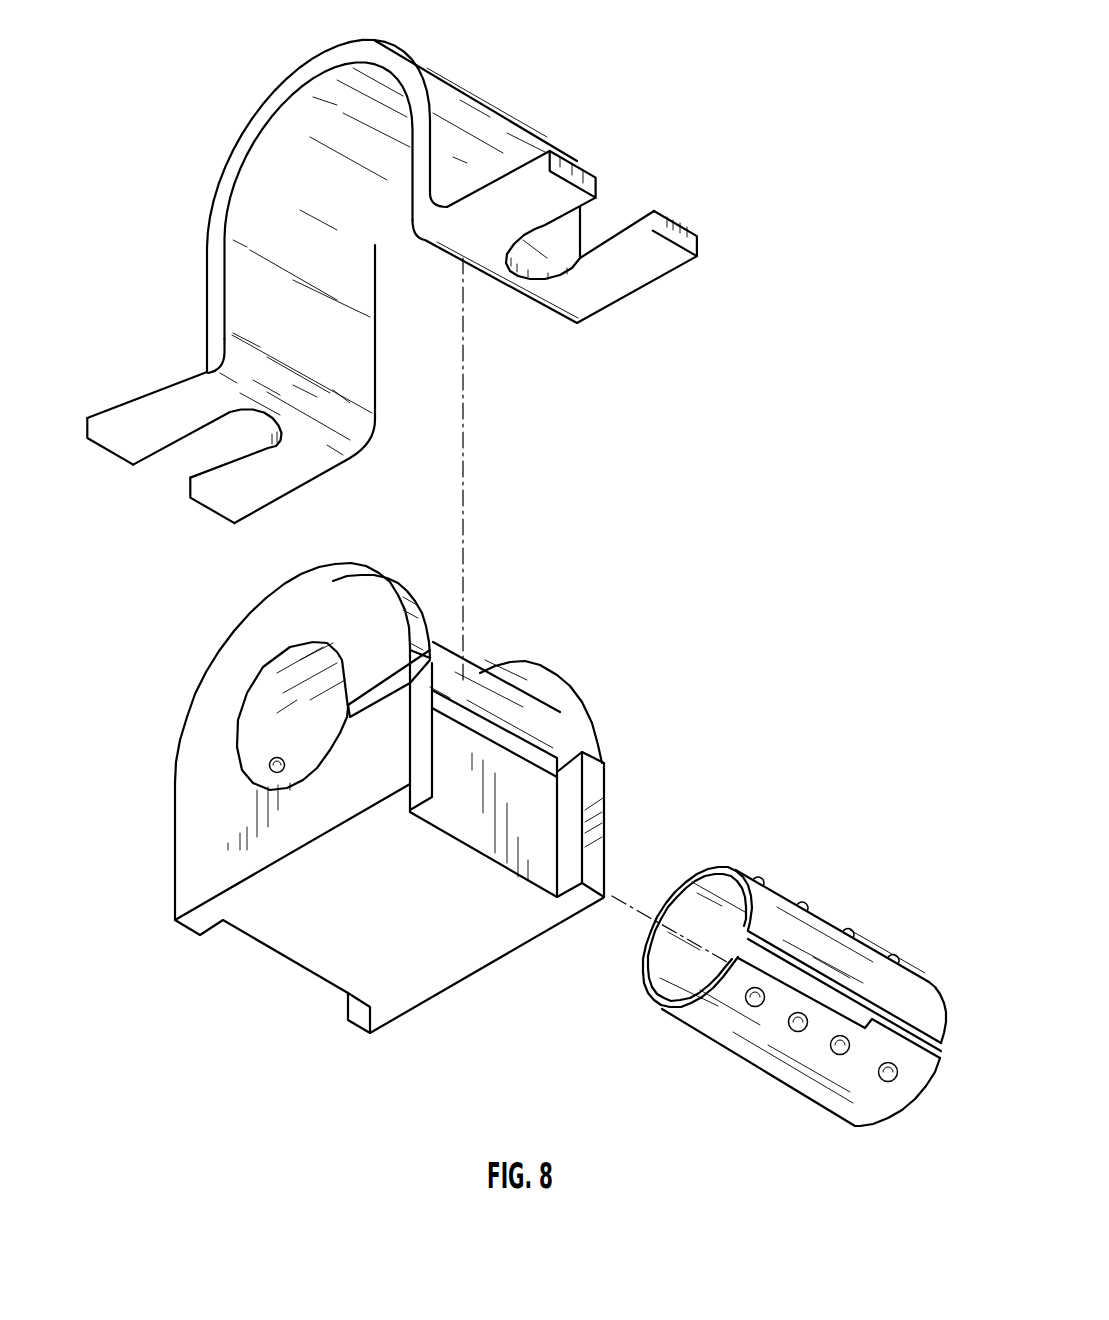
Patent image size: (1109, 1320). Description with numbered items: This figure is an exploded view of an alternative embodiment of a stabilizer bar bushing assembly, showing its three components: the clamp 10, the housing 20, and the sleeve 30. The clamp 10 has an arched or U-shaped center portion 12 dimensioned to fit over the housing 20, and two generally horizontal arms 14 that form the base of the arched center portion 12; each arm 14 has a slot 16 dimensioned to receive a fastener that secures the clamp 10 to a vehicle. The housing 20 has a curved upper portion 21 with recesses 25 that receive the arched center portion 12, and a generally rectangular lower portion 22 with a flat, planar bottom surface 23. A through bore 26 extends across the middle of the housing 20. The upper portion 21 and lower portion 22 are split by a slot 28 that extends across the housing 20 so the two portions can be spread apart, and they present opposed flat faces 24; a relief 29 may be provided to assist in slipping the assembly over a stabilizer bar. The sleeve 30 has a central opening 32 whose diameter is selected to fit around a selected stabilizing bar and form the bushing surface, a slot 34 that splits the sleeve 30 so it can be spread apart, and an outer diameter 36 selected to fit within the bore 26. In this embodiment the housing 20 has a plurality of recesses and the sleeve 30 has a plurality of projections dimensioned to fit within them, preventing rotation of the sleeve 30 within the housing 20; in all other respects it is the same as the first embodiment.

The clamp 10 is at (162, 208).
The arched center portion 12 is at (313, 161).
The arms 14 is at (693, 228).
The slot 16 is at (622, 199).
The housing 20 is at (686, 593).
The upper portion 21 is at (660, 667).
The lower portion 22 is at (337, 788).
The bottom surface 23 is at (392, 912).
The flat faces 24 is at (368, 696).
The recesses 25 is at (500, 817).
The through bore 26 is at (287, 691).
The slot 28 is at (604, 784).
The relief 29 is at (598, 762).
The sleeve 30 is at (899, 890).
The central opening 32 is at (676, 961).
The slot 34 is at (946, 1053).
The outer diameter 36 is at (888, 1105).